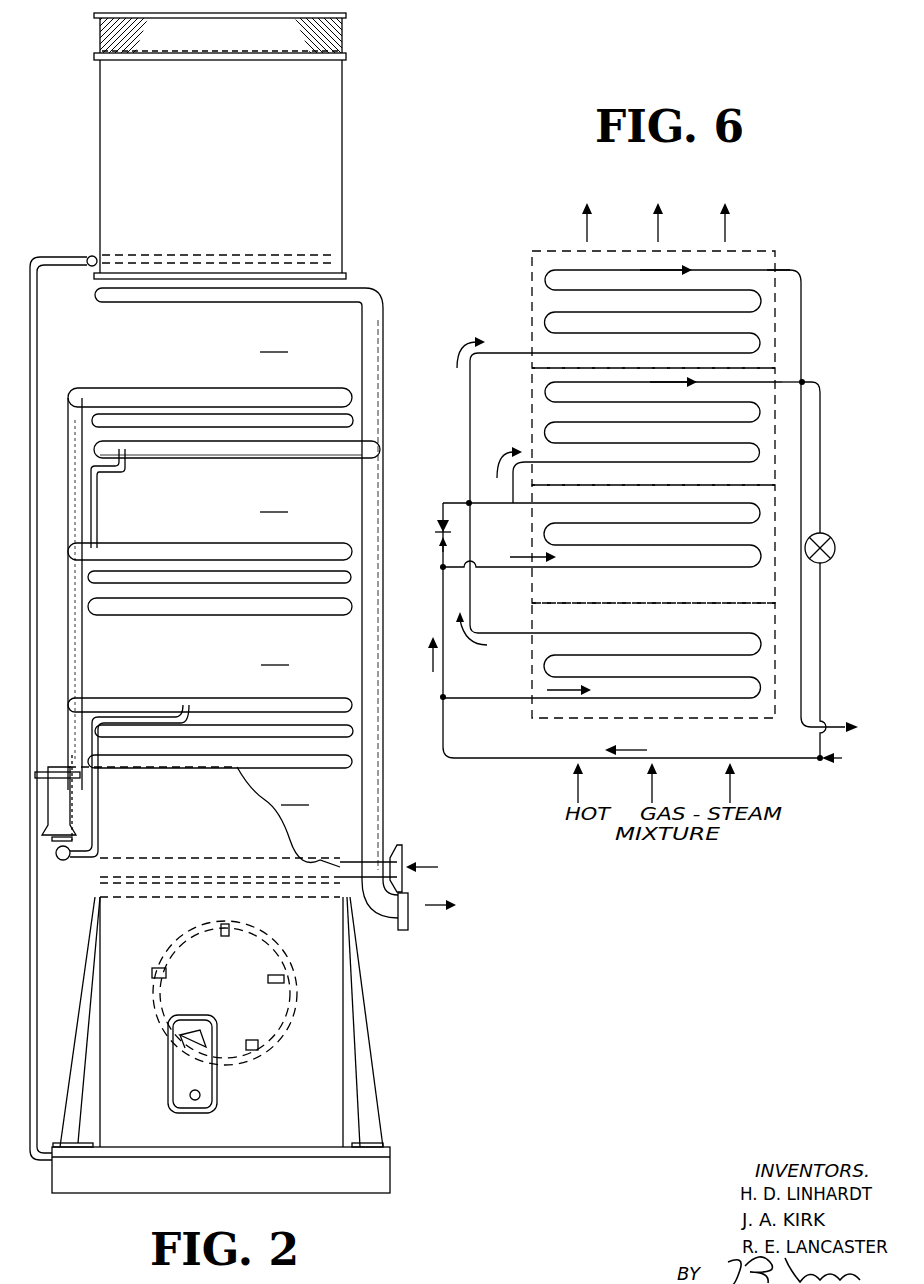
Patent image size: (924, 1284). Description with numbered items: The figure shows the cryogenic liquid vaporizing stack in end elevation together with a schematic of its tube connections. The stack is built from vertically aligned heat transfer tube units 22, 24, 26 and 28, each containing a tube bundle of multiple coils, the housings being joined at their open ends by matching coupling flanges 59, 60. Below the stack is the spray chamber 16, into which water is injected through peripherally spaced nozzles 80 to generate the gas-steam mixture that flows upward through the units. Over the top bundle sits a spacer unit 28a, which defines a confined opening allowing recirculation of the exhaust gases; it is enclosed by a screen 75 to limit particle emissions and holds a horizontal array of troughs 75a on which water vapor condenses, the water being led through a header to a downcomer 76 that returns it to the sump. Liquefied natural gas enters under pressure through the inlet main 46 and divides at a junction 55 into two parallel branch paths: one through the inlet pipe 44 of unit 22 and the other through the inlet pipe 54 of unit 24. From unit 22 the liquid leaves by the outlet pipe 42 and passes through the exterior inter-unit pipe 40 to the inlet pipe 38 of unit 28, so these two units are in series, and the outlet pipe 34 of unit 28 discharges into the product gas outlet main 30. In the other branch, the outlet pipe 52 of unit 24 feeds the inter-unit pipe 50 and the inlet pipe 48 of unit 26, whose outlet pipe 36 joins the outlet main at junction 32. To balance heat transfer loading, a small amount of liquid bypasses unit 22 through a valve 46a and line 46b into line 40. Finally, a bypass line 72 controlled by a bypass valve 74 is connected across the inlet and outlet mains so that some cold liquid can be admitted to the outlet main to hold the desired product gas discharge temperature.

In FIG. 2, the spray chamber 16 is at (280, 940).
In FIG. 2, the heat transfer tube unit 22 is at (204, 832).
In FIG. 6, the heat transfer tube unit 22 is at (777, 635).
In FIG. 2, the heat transfer tube unit 24 is at (210, 689).
In FIG. 6, the heat transfer tube unit 24 is at (777, 525).
In FIG. 2, the heat transfer tube unit 26 is at (220, 551).
In FIG. 6, the heat transfer tube unit 26 is at (777, 443).
In FIG. 2, the heat transfer tube unit 28 is at (274, 340).
In FIG. 6, the heat transfer tube unit 28 is at (750, 251).
In FIG. 2, the spacer unit 28a is at (330, 178).
In FIG. 2, the product gas outlet main 30 is at (384, 668).
In FIG. 6, the product gas outlet main 30 is at (803, 672).
In FIG. 2, the junction 32 is at (372, 443).
In FIG. 6, the junction 32 is at (805, 380).
In FIG. 2, the outlet pipe of unit 28 34 is at (345, 296).
In FIG. 6, the outlet pipe of unit 28 34 is at (780, 270).
In FIG. 2, the outlet pipe of unit 26 36 is at (335, 458).
In FIG. 6, the outlet pipe of unit 26 36 is at (783, 380).
In FIG. 2, the inlet pipe of unit 28 38 is at (120, 390).
In FIG. 6, the inlet pipe of unit 28 38 is at (542, 352).
In FIG. 2, the inter-unit pipe 40 is at (80, 532).
In FIG. 6, the inter-unit pipe 40 is at (470, 410).
In FIG. 2, the outlet pipe of unit 22 42 is at (333, 760).
In FIG. 6, the outlet pipe of unit 22 42 is at (542, 630).
In FIG. 6, the inlet pipe of unit 22 44 is at (520, 698).
In FIG. 2, the inlet main 46 is at (363, 900).
In FIG. 6, the inlet main 46 is at (463, 765).
In FIG. 6, the valve 46a is at (436, 520).
In FIG. 6, the bypass line 46b is at (460, 503).
In FIG. 6, the inlet pipe of unit 26 48 is at (542, 455).
In FIG. 6, the inter-unit pipe 50 is at (470, 503).
In FIG. 6, the outlet pipe of unit 24 52 is at (542, 508).
In FIG. 6, the inlet pipe of unit 24 54 is at (542, 568).
In FIG. 2, the junction 55 is at (438, 702).
In FIG. 6, the junction 55 is at (443, 698).
In FIG. 2, the coupling flange 59 is at (352, 577).
In FIG. 2, the coupling flange 60 is at (352, 572).
In FIG. 2, the bypass line 72 is at (88, 498).
In FIG. 6, the bypass line 72 is at (822, 590).
In FIG. 2, the bypass valve 74 is at (60, 768).
In FIG. 6, the bypass valve 74 is at (836, 548).
In FIG. 2, the screen 75 is at (345, 42).
In FIG. 2, the troughs 75a is at (190, 256).
In FIG. 2, the downcomer 76 is at (37, 300).
In FIG. 2, the nozzles 80 is at (275, 1048).